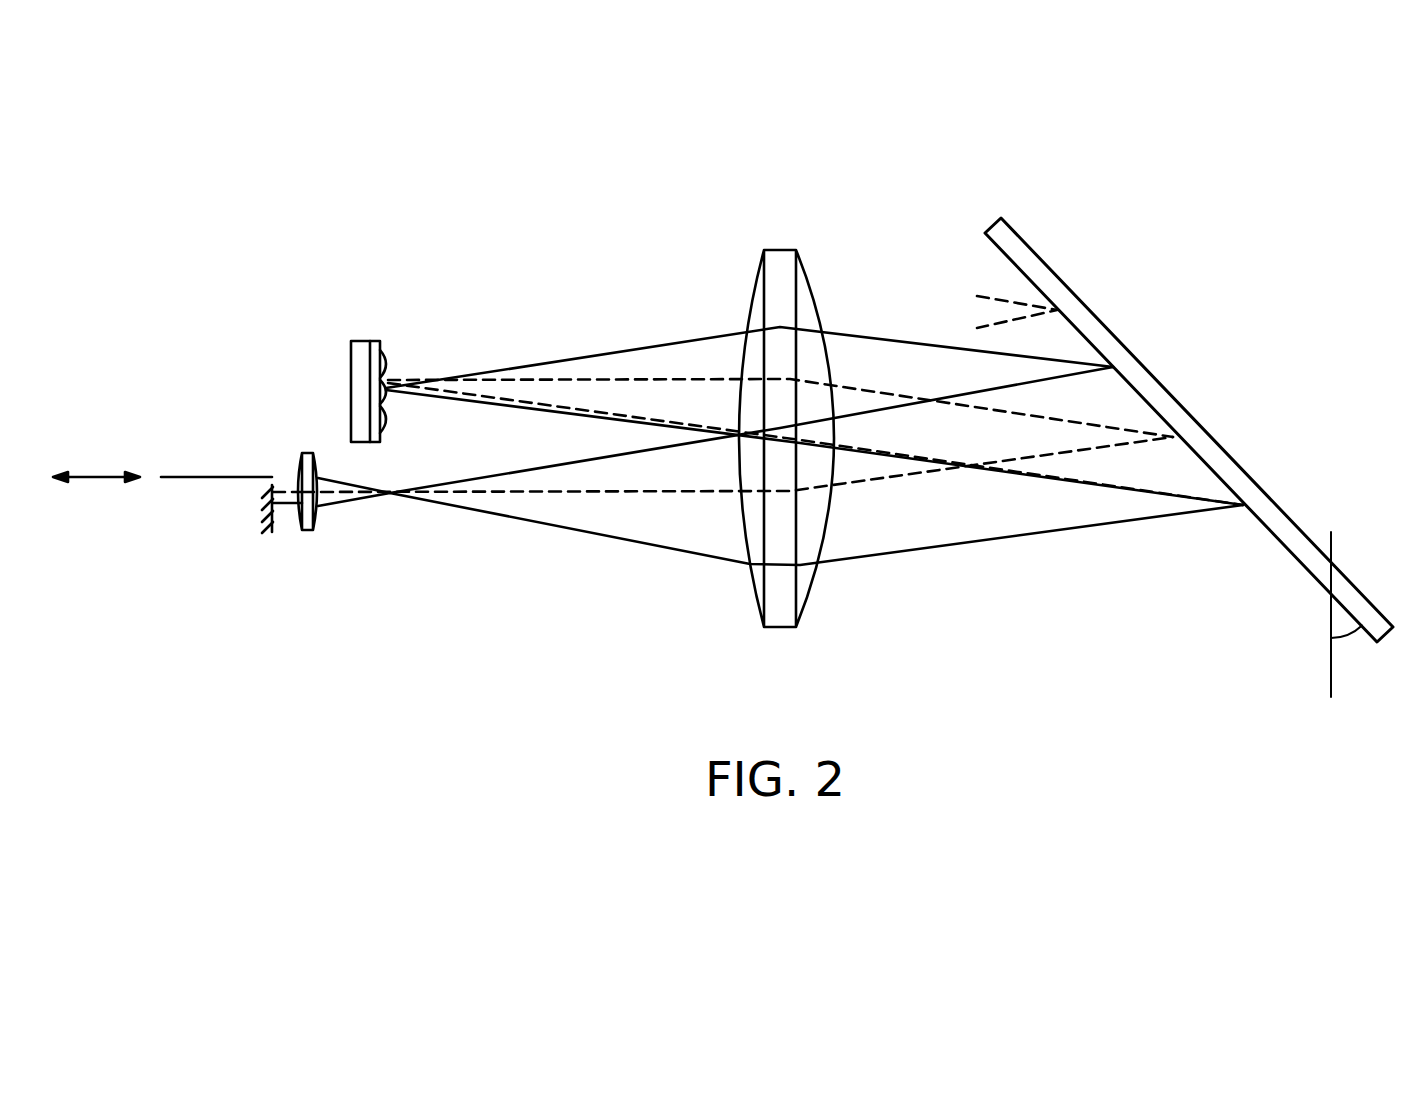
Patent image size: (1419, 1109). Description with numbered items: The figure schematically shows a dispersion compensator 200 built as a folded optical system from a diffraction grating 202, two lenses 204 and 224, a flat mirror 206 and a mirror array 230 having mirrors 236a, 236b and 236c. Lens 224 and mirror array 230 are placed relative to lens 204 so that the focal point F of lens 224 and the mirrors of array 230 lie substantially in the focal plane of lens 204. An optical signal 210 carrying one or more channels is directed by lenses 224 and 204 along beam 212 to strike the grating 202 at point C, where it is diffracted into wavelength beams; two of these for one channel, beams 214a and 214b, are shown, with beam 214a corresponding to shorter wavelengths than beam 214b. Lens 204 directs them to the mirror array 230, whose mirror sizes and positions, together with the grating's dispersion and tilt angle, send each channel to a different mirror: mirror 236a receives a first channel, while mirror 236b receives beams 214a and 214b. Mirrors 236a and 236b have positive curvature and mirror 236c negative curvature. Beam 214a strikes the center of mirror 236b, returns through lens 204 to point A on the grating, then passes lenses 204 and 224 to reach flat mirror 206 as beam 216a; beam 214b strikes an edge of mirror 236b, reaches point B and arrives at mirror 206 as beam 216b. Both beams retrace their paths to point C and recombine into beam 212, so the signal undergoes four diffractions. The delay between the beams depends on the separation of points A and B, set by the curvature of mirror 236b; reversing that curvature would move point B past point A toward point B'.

The dispersion compensator 200 is at (342, 736).
The diffraction grating 202 is at (1019, 237).
The lens 204 is at (796, 250).
The flat mirror 206 is at (245, 540).
The optical signal 210 is at (86, 473).
The beam 212 is at (882, 557).
The beam 214a is at (1005, 475).
The beam 214b is at (897, 454).
The beam 216a is at (283, 510).
The beam 216b is at (288, 491).
The lens 224 is at (309, 531).
The mirror array 230 is at (362, 341).
The mirror 236a is at (401, 345).
The mirror 236b is at (406, 370).
The mirror 236c is at (411, 412).
The focal point F is at (391, 512).
The point A is at (1160, 368).
The point B is at (1274, 437).
The point B' is at (1155, 302).
The point C is at (1297, 510).